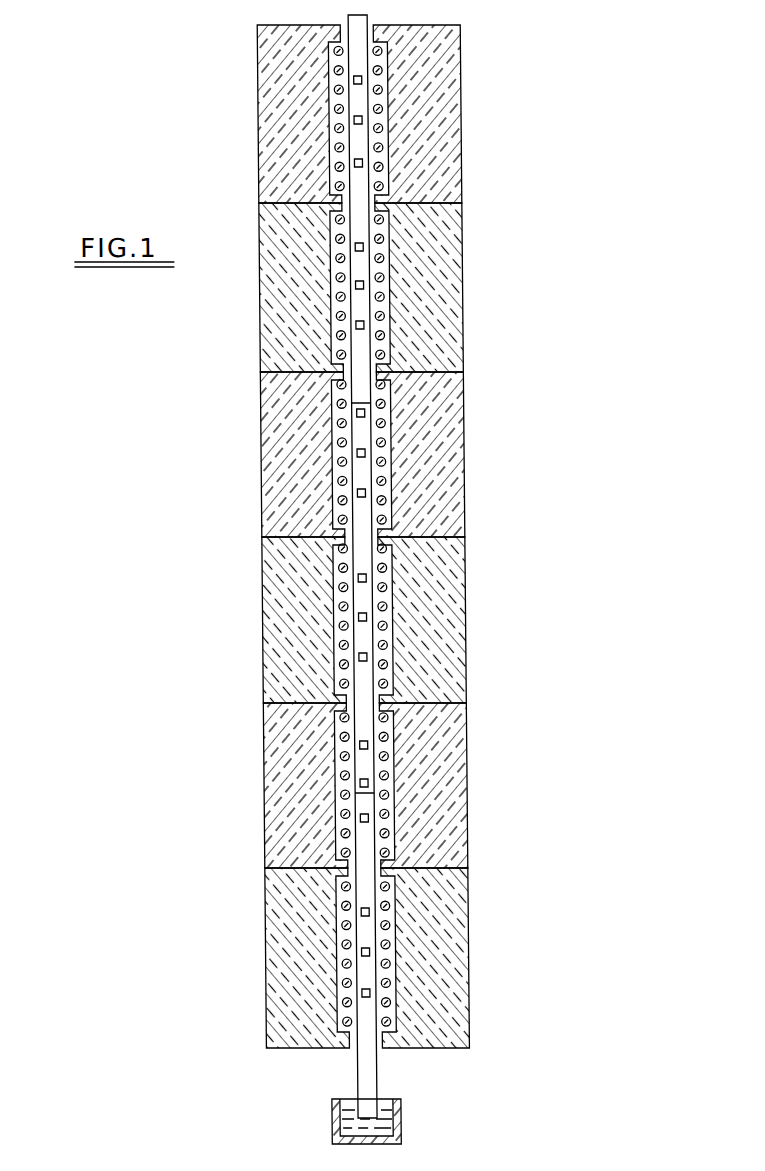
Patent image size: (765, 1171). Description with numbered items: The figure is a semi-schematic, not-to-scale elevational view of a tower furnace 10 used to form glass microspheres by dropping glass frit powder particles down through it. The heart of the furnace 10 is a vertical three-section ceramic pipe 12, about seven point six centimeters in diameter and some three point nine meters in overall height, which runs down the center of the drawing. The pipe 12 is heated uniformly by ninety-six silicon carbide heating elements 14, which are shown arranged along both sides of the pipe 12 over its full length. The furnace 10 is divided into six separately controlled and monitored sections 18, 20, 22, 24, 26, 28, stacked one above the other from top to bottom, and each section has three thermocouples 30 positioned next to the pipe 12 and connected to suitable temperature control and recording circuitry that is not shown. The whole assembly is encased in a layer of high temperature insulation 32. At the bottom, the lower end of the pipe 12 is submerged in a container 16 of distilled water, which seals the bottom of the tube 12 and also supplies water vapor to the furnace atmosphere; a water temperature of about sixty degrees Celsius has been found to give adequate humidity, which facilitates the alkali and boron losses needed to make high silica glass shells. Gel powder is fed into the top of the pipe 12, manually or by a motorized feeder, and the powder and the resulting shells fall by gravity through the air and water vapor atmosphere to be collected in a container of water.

The furnace 10 is at (237, 313).
The ceramic pipe 12 is at (362, 17).
The silicon carbide heating elements 14 is at (381, 187).
The container 16 is at (391, 1137).
The furnace section 18 is at (270, 82).
The furnace section 20 is at (277, 343).
The furnace section 22 is at (276, 503).
The furnace section 24 is at (280, 641).
The furnace section 26 is at (288, 781).
The furnace section 28 is at (281, 965).
The thermocouples 30 is at (353, 163).
The high temperature insulation 32 is at (460, 764).